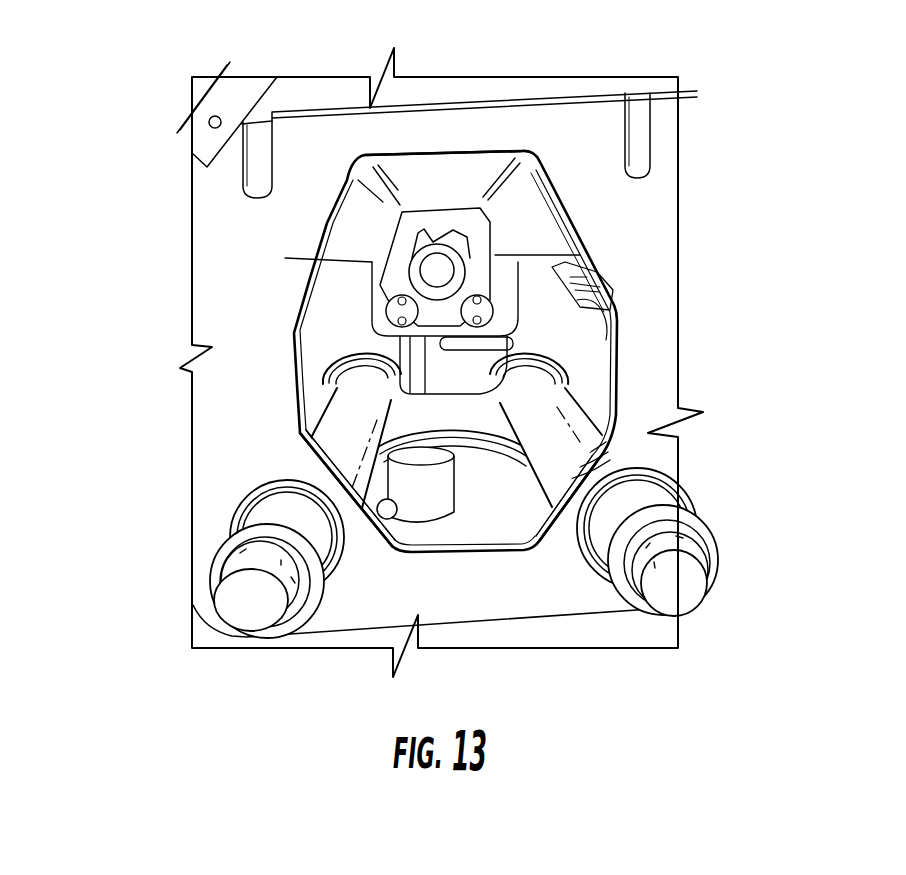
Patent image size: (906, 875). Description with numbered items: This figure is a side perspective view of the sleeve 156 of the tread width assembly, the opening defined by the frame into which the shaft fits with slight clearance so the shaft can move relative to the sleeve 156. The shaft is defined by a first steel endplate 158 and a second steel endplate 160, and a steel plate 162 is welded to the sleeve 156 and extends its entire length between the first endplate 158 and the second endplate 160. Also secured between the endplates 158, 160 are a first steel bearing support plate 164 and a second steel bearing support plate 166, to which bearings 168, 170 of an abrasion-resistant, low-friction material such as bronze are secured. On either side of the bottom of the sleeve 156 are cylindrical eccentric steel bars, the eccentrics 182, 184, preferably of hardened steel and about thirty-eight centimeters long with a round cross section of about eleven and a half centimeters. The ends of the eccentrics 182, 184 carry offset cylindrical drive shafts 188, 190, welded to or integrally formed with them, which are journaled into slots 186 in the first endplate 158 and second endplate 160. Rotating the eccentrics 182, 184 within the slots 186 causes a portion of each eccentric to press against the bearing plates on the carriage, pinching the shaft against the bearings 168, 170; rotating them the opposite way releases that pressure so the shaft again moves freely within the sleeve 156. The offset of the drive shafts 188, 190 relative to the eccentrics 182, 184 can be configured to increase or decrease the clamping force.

The sleeve 156 is at (300, 268).
The first steel endplate 158 is at (330, 334).
The second steel endplate 160 is at (222, 452).
The steel plate 162 is at (443, 182).
The first steel bearing support plate 164 is at (323, 228).
The second steel bearing support plate 166 is at (540, 164).
The bearing 168 is at (342, 195).
The bearing 170 is at (542, 204).
The eccentric 182 is at (330, 450).
The eccentric 184 is at (550, 455).
The slot 186 is at (648, 468).
The drive shaft 188 is at (222, 580).
The drive shaft 190 is at (663, 580).